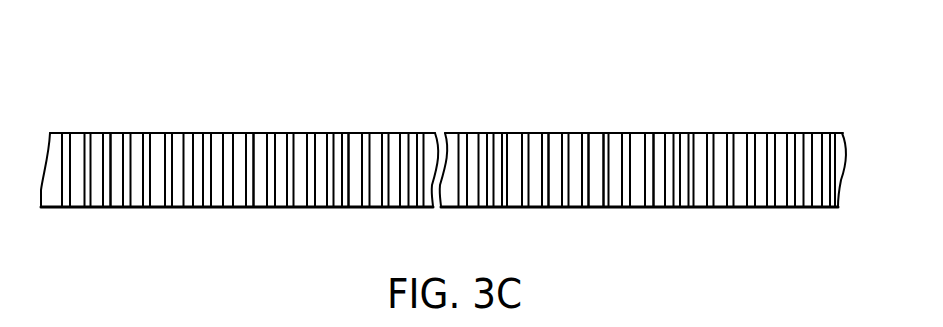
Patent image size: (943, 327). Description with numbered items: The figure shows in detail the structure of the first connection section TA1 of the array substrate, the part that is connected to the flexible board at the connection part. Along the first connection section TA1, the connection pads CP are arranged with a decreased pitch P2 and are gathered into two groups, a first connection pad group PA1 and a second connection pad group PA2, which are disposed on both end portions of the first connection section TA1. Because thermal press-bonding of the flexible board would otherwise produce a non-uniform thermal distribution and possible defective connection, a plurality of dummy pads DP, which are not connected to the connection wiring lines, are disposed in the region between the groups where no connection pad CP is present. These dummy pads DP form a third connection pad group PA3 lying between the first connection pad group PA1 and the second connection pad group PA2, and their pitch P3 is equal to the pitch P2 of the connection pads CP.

The first connection section TA1 is at (822, 93).
The first connection pad group PA1 is at (275, 122).
The second connection pad group PA2 is at (614, 122).
The third connection pad group PA3 is at (610, 122).
The connection pad CP is at (68, 190).
The pitch P2 is at (268, 207).
The pitch P3 is at (563, 207).
The dummy pad DP is at (337, 190).